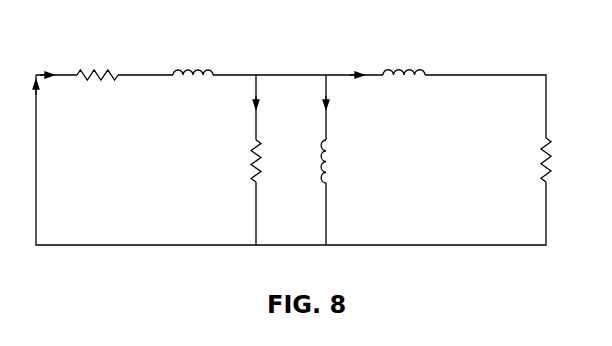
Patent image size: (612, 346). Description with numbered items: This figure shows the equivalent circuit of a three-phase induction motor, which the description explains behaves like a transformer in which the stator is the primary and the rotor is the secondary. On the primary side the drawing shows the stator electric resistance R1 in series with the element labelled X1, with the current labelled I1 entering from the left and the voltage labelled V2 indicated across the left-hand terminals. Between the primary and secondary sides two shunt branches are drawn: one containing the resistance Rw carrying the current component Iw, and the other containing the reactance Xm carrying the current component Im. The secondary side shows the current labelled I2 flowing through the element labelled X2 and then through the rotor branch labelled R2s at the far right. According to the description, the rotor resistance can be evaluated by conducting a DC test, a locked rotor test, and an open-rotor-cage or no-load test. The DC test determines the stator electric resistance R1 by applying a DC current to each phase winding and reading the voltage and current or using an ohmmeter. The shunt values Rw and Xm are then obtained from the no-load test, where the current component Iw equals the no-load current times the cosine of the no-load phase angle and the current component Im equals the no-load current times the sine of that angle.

The secondary voltage V2 is at (19, 150).
The primary current I1 is at (54, 50).
The stator electric resistance R1 is at (97, 64).
The primary leakage reactance X1 is at (193, 62).
The secondary current I2 is at (357, 50).
The secondary leakage reactance X2 is at (404, 62).
The core loss current component Iw is at (238, 96).
The magnetizing current component Im is at (339, 96).
The core loss resistance Rw is at (239, 161).
The magnetizing reactance Xm is at (341, 161).
The rotor resistance divided by slip R2s is at (585, 162).